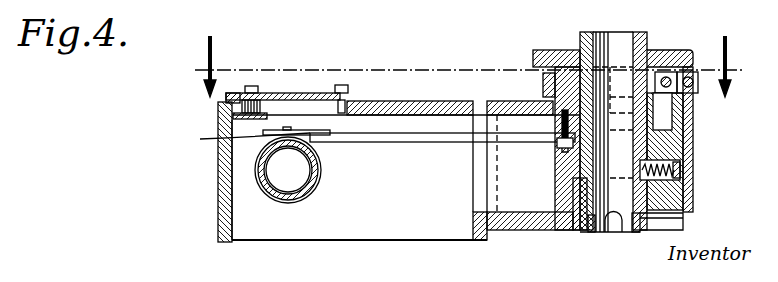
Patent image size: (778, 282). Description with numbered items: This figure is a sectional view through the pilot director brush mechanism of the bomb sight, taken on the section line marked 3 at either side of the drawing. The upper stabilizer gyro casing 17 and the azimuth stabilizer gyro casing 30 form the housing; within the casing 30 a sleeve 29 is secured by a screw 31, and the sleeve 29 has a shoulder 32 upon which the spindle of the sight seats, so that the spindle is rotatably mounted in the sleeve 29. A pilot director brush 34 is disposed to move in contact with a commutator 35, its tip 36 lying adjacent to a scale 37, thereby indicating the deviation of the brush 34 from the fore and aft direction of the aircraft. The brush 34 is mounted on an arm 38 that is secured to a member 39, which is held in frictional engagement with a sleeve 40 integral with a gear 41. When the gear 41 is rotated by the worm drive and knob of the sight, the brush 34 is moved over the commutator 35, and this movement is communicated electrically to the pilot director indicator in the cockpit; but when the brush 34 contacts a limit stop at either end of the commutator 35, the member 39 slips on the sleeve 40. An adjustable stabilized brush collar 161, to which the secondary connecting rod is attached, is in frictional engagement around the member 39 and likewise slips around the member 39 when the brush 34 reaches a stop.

The section line 3- 3 is at (462, 66).
The upper stabilizer gyro casing 17 is at (352, 228).
The sleeve 29 is at (625, 36).
The azimuth stabilizer gyro casing 30 is at (528, 200).
The screw 31 is at (676, 164).
The shoulder 32 is at (613, 72).
The pilot director brush 34 is at (272, 136).
The commutator 35 is at (321, 172).
The tip 36 is at (241, 142).
The scale 37 is at (260, 118).
The arm 38 is at (427, 142).
The member 39 is at (570, 77).
The sleeve 40 is at (652, 100).
The gear 41 is at (690, 52).
The adjustable stabilized brush collar 161 is at (545, 81).